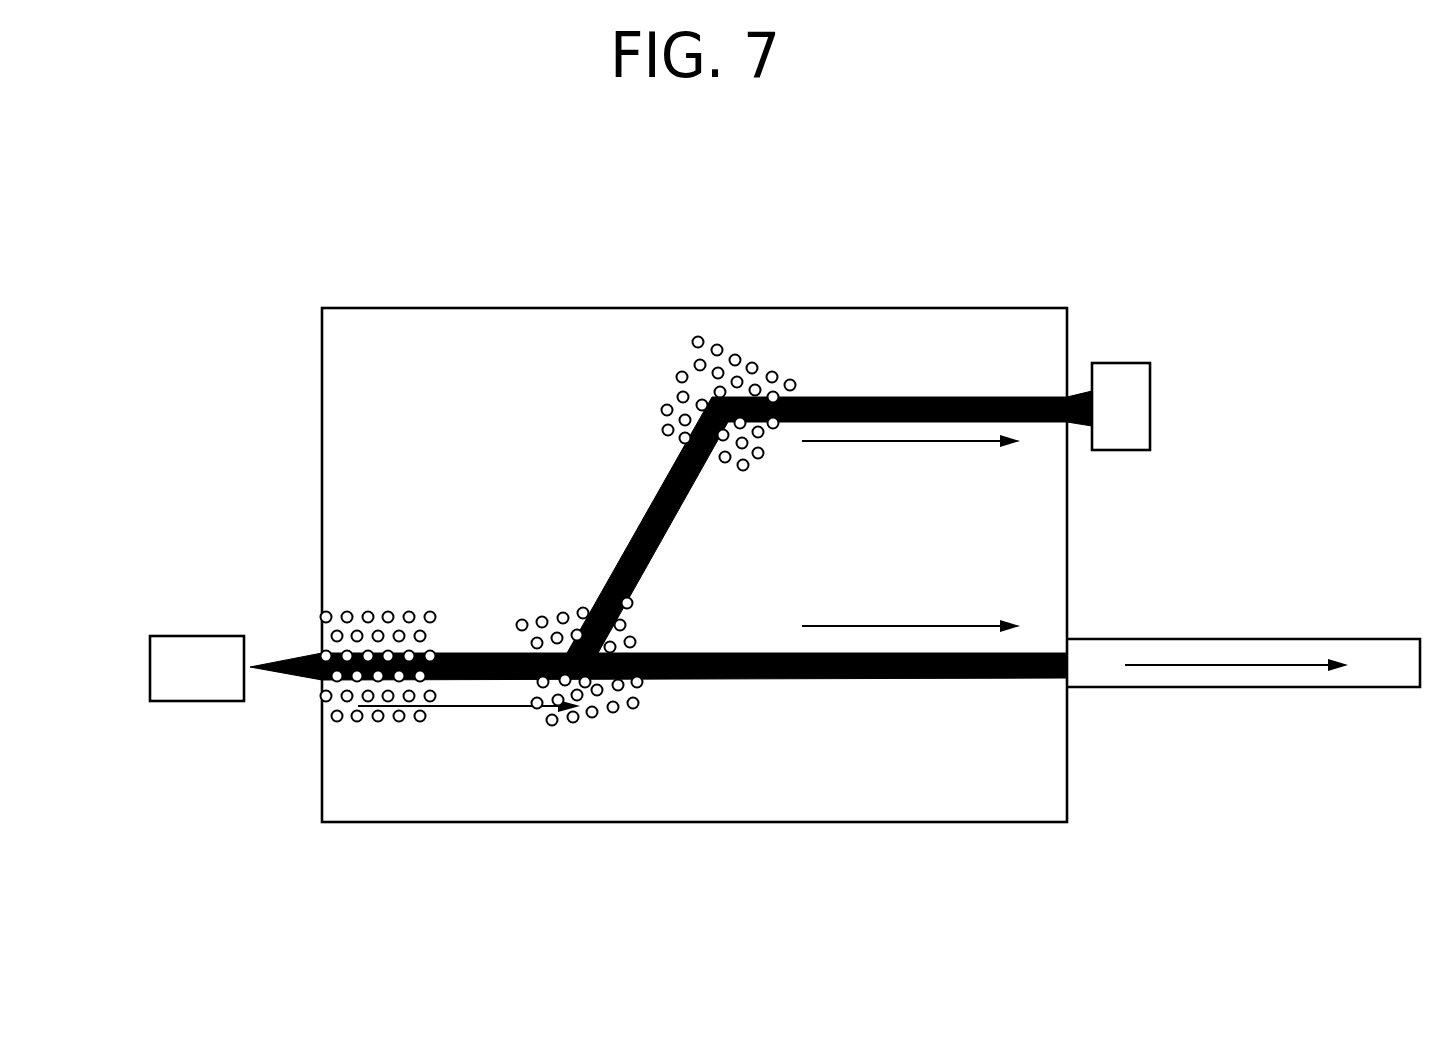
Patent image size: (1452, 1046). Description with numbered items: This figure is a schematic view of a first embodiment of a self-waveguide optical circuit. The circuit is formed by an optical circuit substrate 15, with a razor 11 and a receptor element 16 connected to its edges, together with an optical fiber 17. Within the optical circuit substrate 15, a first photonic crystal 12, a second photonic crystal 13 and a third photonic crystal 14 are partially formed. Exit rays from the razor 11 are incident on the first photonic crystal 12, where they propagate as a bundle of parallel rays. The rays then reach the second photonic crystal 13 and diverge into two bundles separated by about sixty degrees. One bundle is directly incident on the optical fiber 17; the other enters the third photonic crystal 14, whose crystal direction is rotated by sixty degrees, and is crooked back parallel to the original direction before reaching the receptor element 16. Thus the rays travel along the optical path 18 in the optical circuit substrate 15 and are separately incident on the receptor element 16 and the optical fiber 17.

The razor 11 is at (180, 636).
The first photonic crystal 12 is at (357, 631).
The second photonic crystal 13 is at (558, 605).
The third photonic crystal 14 is at (675, 402).
The optical circuit substrate 15 is at (866, 324).
The receptor element 16 is at (1122, 363).
The optical fiber 17 is at (1210, 639).
The optical path 18 is at (779, 680).